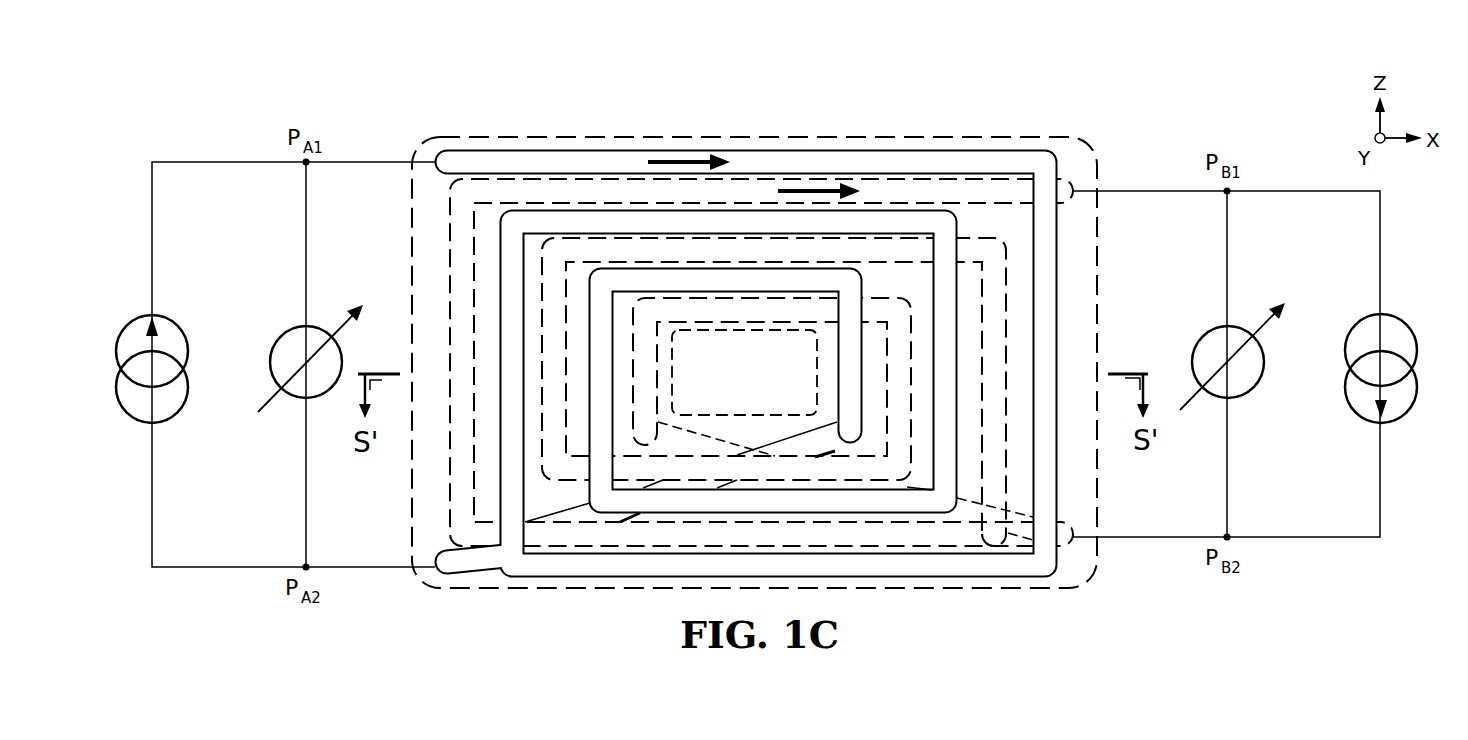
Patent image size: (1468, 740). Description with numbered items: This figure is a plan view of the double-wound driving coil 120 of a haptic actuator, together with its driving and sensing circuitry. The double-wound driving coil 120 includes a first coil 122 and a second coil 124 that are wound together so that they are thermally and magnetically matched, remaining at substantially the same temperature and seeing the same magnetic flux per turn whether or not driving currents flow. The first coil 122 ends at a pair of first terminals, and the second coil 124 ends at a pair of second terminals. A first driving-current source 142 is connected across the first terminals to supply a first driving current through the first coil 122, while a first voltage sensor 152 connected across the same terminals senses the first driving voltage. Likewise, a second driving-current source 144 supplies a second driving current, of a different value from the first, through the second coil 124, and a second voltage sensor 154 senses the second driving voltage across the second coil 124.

The double-wound driving coil 120 is at (754, 348).
The first coil 122 is at (945, 567).
The second coil 124 is at (587, 532).
The first driving-current source 142 is at (137, 317).
The second driving-current source 144 is at (1395, 422).
The first voltage sensor 152 is at (290, 328).
The second voltage sensor 154 is at (1243, 398).